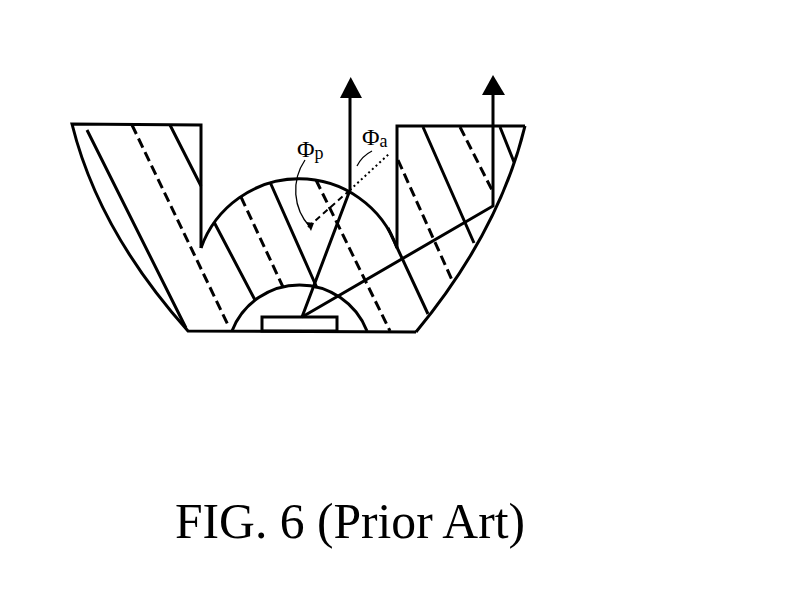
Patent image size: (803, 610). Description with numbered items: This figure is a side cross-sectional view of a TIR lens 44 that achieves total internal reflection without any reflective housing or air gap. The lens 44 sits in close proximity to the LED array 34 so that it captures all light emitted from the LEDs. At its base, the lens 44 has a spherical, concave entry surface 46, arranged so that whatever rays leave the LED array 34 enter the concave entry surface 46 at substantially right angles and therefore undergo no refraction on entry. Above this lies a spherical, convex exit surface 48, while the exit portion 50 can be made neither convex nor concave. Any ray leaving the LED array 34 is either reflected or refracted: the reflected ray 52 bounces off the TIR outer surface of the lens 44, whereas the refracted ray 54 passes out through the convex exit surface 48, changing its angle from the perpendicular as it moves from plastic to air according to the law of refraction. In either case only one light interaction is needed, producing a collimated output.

The LED array 34 is at (298, 332).
The lens 44 is at (557, 73).
The concave entry surface 46 is at (268, 284).
The convex exit surface 48 is at (247, 190).
The exit portion 50 is at (452, 122).
The reflected ray 52 is at (497, 163).
The refracted ray 54 is at (352, 108).